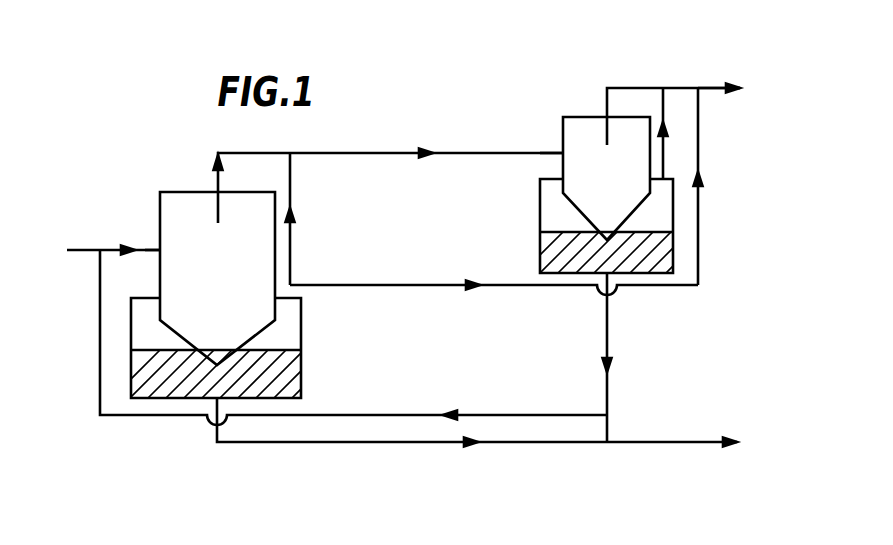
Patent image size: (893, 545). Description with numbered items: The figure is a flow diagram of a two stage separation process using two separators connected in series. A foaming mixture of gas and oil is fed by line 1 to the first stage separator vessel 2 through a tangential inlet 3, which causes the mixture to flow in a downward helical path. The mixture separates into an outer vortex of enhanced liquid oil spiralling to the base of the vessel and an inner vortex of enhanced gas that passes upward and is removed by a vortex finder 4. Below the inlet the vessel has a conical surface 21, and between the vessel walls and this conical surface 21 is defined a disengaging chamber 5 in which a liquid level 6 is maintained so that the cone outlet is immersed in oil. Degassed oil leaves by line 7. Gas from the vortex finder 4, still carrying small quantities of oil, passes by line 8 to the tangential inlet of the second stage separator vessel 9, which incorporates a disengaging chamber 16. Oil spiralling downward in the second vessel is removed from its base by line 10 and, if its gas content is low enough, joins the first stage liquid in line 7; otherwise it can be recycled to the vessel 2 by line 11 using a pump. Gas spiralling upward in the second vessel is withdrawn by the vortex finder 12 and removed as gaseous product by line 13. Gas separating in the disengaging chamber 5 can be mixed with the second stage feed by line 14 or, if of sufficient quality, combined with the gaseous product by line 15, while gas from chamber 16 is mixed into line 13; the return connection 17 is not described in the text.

The line 1 is at (82, 247).
The first stage separator vessel 2 is at (175, 192).
The tangential inlet 3 is at (158, 247).
The vortex finder 4 is at (222, 212).
The disengaging chamber 5 is at (301, 325).
The liquid level 6 is at (287, 355).
The line 7 is at (300, 445).
The line 8 is at (393, 156).
The second stage separator vessel 9 is at (563, 133).
The line 10 is at (607, 320).
The line 11 is at (487, 413).
The vortex finder 12 is at (607, 128).
The line 13 is at (705, 88).
The line 14 is at (290, 265).
The line 15 is at (420, 282).
The disengaging chamber 16 is at (540, 200).
The return vapor line 17 is at (663, 115).
The conical surface 21 is at (172, 331).